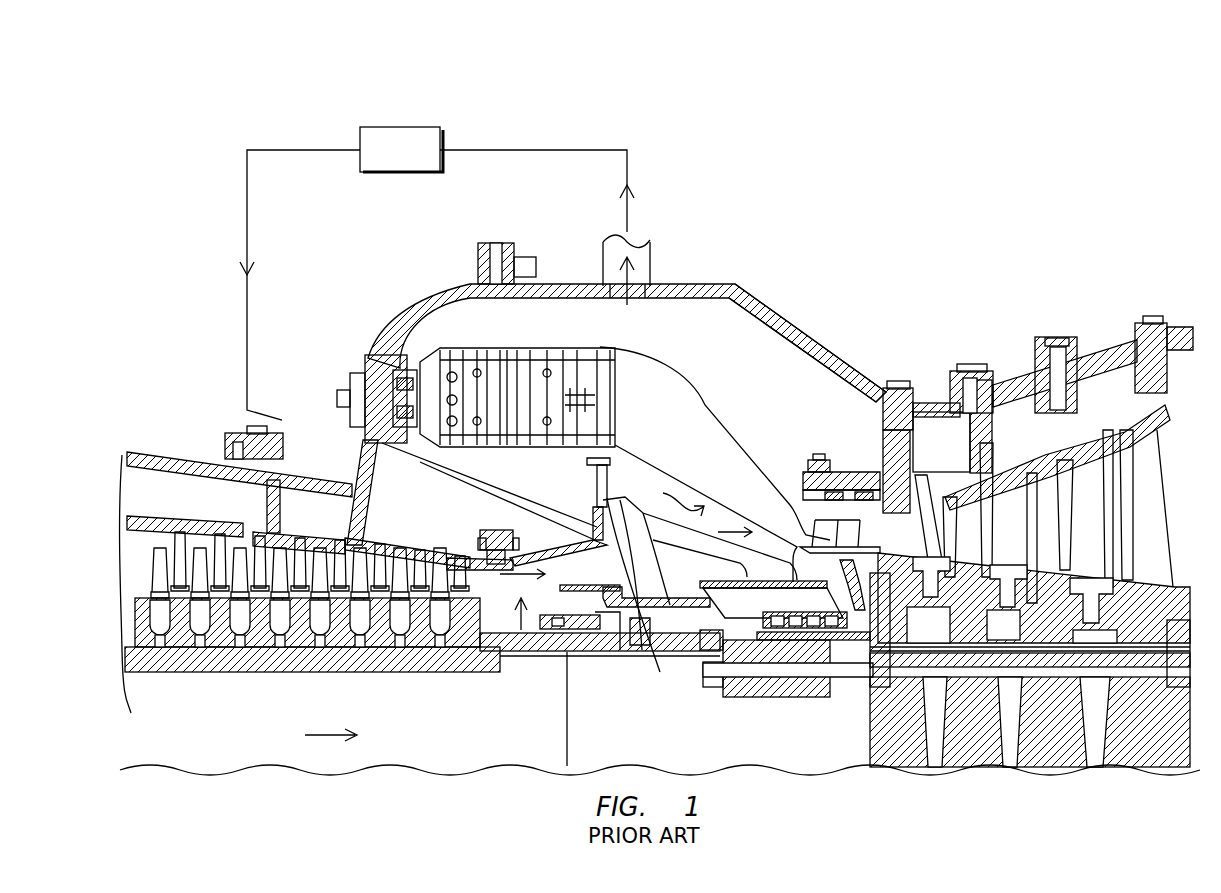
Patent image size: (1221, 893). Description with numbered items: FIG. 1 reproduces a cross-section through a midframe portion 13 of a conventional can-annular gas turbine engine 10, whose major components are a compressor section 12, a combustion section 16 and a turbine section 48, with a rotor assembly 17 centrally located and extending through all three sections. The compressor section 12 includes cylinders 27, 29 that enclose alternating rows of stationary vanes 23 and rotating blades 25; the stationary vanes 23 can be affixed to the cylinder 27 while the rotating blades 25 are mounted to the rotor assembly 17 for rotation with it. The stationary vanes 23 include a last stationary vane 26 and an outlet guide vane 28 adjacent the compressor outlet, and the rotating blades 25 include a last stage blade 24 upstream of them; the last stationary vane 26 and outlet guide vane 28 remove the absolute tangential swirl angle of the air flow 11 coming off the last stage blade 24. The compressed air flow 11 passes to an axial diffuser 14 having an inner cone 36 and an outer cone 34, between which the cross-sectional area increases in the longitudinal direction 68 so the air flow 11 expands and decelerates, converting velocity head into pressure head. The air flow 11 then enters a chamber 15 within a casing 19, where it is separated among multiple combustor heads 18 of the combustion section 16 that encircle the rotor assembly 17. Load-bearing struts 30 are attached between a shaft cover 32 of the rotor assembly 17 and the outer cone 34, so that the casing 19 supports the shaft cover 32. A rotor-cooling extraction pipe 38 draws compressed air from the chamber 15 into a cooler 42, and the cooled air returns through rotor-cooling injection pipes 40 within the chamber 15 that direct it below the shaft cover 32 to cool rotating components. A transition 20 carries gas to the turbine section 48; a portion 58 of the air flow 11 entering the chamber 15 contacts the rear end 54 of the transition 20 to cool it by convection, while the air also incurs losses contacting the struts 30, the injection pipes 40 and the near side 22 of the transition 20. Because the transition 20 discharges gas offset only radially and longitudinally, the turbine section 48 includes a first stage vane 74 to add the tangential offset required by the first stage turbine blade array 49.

The gas turbine engine 10 is at (1072, 190).
The air flow 11 is at (680, 503).
The compressor section 12 is at (180, 428).
The midframe portion 13 is at (778, 243).
The axial diffuser 14 is at (512, 660).
The chamber 15 is at (820, 405).
The combustion section 16 is at (556, 232).
The rotor assembly 17 is at (640, 680).
The combustor heads 18 is at (535, 348).
The casing 19 is at (805, 328).
The transition 20 is at (728, 402).
The near side 22 is at (678, 480).
The stationary vanes 23 is at (200, 570).
The last stage blade 24 is at (470, 552).
The rotating blades 25 is at (215, 560).
The last stationary vane 26 is at (465, 535).
The cylinder 27 is at (718, 410).
The outlet guide vane 28 is at (492, 528).
The cylinder 29 is at (140, 455).
The load-bearing struts 30 is at (660, 670).
The shaft cover 32 is at (615, 672).
The outer cone 34 is at (552, 555).
The inner cone 36 is at (555, 670).
The rotor-cooling extraction pipe 38 is at (652, 250).
The rotor-cooling injection pipes 40 is at (425, 478).
The cooler 42 is at (402, 178).
The turbine section 48 is at (1108, 312).
The first stage turbine blade array 49 is at (880, 455).
The rear end 54 is at (800, 475).
The portion of air flow 58 is at (720, 520).
The longitudinal direction 68 is at (320, 733).
The first stage vane 74 is at (845, 533).